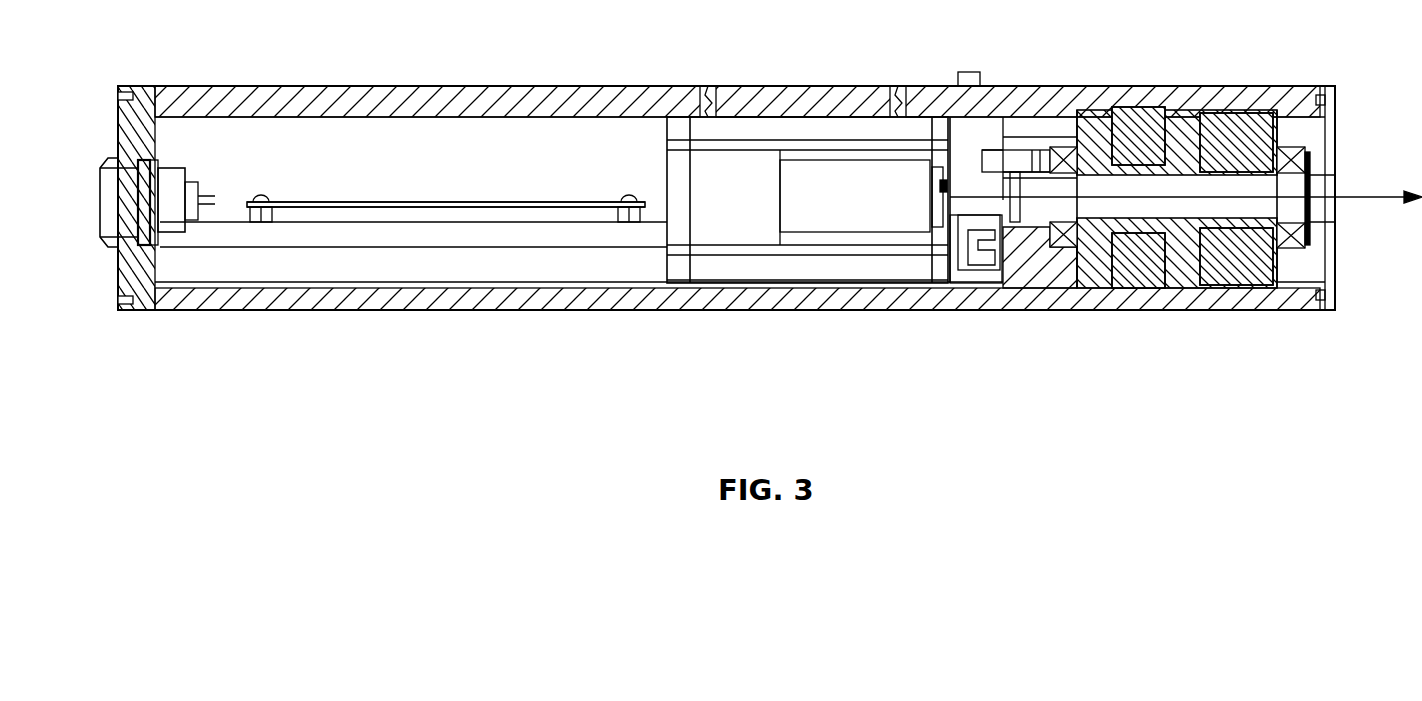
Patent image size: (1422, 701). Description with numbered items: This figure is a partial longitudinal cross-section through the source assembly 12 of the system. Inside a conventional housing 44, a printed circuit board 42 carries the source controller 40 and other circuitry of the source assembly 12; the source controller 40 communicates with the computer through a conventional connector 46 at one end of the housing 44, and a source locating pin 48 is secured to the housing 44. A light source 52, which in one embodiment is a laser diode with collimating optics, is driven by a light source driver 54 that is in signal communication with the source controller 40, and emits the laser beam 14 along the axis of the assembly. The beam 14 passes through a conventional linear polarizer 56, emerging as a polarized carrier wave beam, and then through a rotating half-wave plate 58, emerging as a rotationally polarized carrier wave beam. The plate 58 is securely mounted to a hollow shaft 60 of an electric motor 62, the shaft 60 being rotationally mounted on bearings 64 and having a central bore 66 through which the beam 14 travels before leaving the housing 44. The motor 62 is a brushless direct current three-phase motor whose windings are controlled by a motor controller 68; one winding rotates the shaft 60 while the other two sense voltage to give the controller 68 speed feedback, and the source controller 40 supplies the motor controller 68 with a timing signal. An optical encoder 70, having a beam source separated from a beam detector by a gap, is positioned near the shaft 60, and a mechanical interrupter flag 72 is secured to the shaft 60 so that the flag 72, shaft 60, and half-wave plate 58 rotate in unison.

The source assembly 12 is at (273, 87).
The laser beam 14 is at (1350, 198).
The source controller 40 is at (333, 202).
The printed circuit board 42 is at (400, 202).
The housing 44 is at (404, 297).
The connector 46 is at (105, 190).
The source locating pin 48 is at (977, 78).
The light source 52 is at (798, 208).
The light source driver 54 is at (470, 202).
The linear polarizer 56 is at (948, 178).
The rotating half-wave plate 58 is at (1017, 185).
The hollow shaft 60 is at (1287, 105).
The electric motor 62 is at (1142, 127).
The bearings 64 is at (1063, 247).
The central bore 66 is at (1120, 208).
The motor controller 68 is at (552, 207).
The optical encoder 70 is at (985, 262).
The mechanical interrupter flag 72 is at (973, 247).